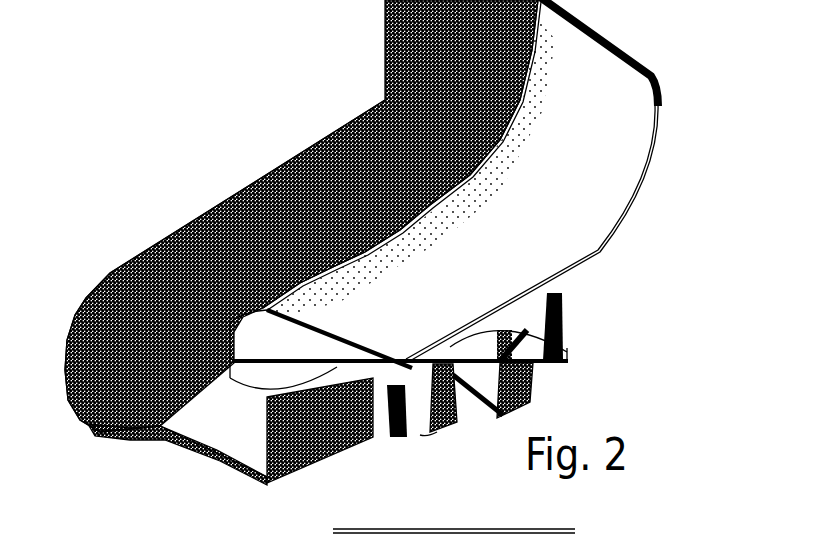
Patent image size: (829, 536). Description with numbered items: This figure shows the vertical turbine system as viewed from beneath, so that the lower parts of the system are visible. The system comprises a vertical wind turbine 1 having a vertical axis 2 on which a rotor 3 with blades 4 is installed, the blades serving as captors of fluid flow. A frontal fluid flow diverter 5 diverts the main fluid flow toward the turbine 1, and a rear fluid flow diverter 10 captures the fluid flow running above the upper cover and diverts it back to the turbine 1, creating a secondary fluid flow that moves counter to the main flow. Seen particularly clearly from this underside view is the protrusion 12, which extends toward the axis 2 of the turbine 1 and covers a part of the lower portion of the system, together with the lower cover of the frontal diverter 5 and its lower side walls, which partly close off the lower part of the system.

The rear fluid flow diverter 10 is at (613, 34).
The frontal fluid flow diverter 5 is at (90, 296).
The protrusion 12 is at (447, 306).
The vertical wind turbine 1 is at (576, 352).
The vertical axis 2 is at (380, 388).
The rotor 3 is at (476, 408).
The blades 4 is at (537, 395).